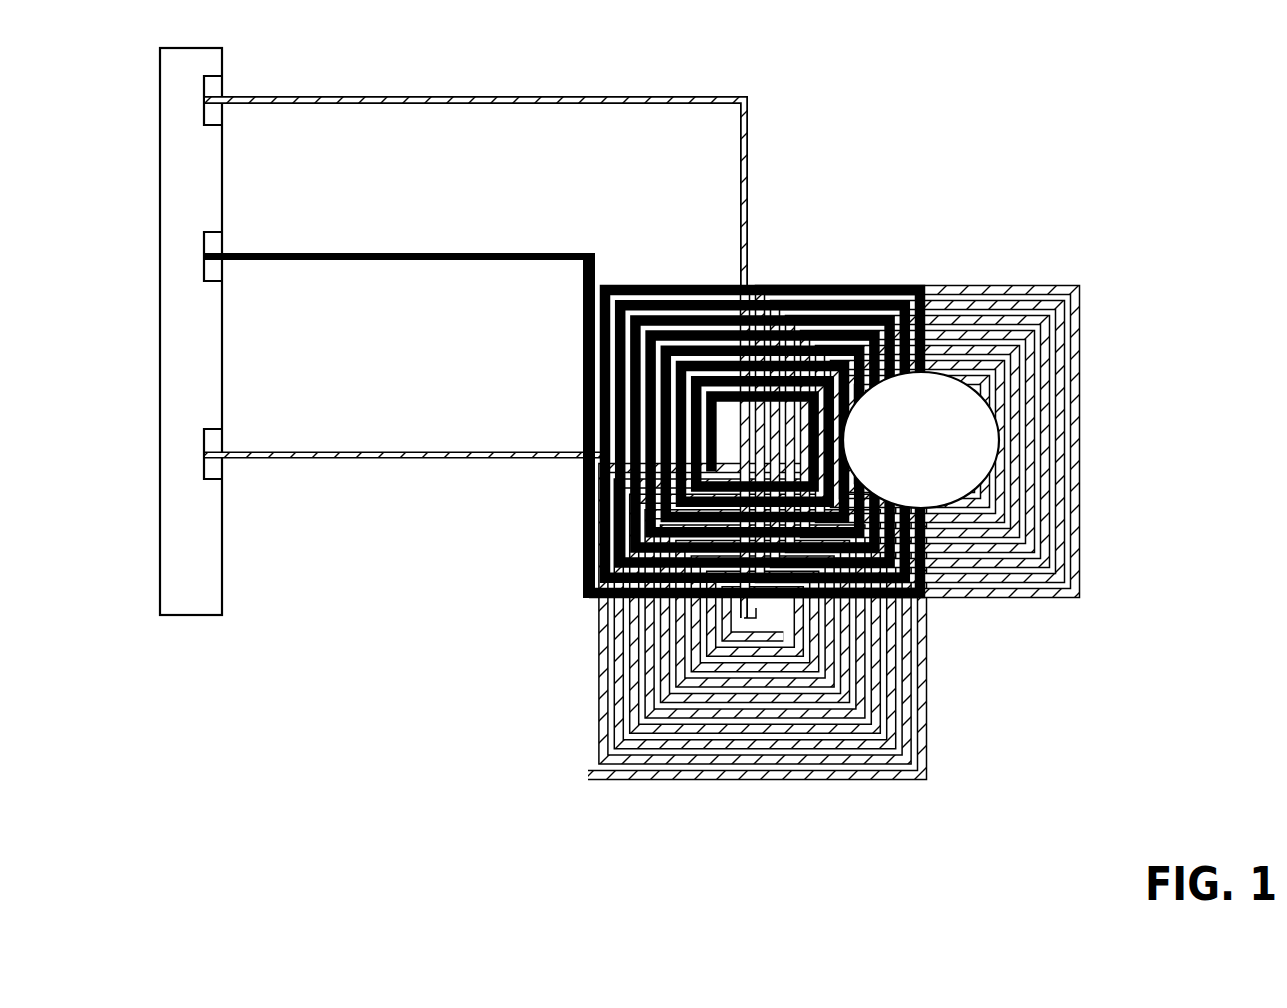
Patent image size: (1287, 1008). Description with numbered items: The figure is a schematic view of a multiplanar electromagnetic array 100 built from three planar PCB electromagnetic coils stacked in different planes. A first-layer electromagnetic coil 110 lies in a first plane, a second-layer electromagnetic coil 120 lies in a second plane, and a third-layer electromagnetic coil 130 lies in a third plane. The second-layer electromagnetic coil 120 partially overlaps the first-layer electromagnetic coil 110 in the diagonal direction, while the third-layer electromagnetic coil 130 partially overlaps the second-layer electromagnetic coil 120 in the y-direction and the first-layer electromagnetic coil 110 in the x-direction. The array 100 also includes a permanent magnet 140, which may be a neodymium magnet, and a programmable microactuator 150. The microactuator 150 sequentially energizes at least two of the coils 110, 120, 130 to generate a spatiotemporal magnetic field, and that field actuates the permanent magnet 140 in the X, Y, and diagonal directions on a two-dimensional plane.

The multiplanar electromagnetic array 100 is at (691, 397).
The first-layer electromagnetic coil 110 is at (1088, 326).
The second-layer electromagnetic coil 120 is at (936, 696).
The third-layer electromagnetic coil 130 is at (578, 371).
The permanent magnet 140 is at (903, 453).
The microactuator 150 is at (224, 362).